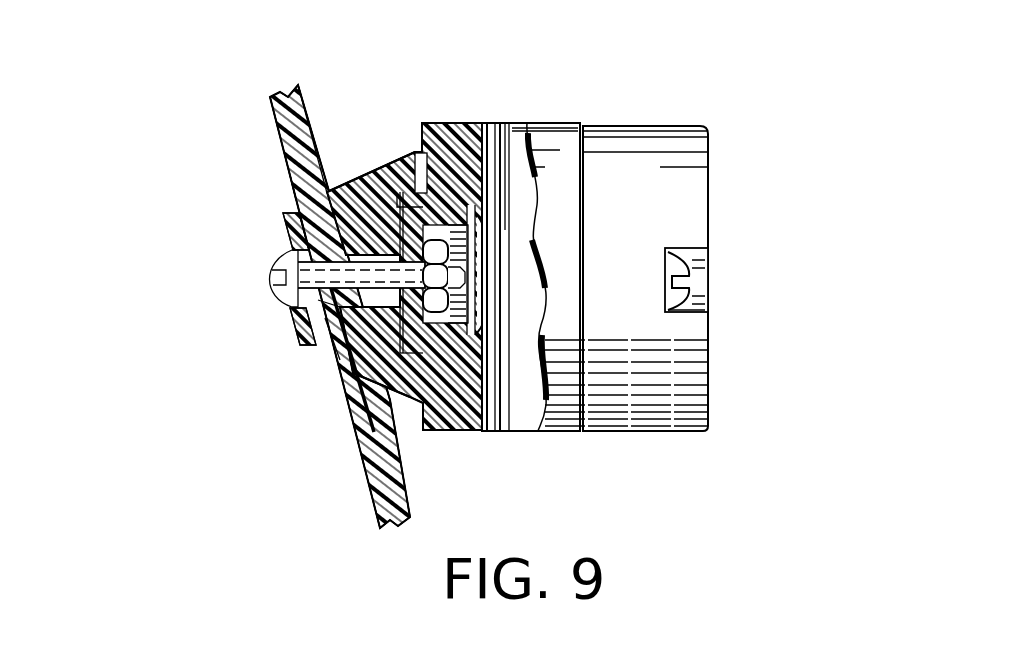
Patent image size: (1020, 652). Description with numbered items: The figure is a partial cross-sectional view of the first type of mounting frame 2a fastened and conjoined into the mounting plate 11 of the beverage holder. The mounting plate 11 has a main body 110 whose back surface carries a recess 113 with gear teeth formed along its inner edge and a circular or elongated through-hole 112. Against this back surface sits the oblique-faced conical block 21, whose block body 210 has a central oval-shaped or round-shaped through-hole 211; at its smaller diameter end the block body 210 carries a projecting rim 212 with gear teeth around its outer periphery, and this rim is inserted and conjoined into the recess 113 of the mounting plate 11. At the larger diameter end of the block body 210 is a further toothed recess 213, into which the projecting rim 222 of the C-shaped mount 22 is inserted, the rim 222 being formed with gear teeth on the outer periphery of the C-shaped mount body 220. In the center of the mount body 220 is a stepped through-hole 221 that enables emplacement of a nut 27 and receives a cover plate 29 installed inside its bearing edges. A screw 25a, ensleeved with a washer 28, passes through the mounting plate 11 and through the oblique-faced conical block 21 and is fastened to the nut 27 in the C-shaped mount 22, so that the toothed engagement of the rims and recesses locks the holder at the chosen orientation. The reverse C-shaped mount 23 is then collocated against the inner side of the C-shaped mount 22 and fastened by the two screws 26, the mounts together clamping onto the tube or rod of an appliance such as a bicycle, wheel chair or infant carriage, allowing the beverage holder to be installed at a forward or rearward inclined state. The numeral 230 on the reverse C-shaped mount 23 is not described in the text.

The first type of mounting frame 2a is at (662, 257).
The mounting plate 11 is at (350, 488).
The mounting plate main body 110 is at (299, 188).
The through-hole 112 is at (325, 318).
The recess 113 is at (328, 187).
The oblique-faced conical block 21 is at (346, 188).
The block body 210 is at (365, 378).
The through-hole 211 is at (320, 312).
The projecting rim 212 is at (355, 420).
The recess 213 is at (460, 185).
The C-shaped mount 22 is at (548, 108).
The C-shaped mount body 220 is at (457, 387).
The stepped through-hole 221 is at (485, 328).
The projecting rim 222 is at (415, 172).
The reverse C-shaped mount 23 is at (668, 110).
The sleeve thread 230 is at (662, 369).
The screw 25a is at (268, 312).
The screws 26 is at (712, 286).
The nut 27 is at (458, 200).
The washer 28 is at (270, 235).
The cover plate 29 is at (535, 320).